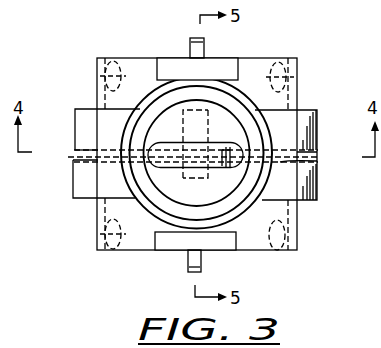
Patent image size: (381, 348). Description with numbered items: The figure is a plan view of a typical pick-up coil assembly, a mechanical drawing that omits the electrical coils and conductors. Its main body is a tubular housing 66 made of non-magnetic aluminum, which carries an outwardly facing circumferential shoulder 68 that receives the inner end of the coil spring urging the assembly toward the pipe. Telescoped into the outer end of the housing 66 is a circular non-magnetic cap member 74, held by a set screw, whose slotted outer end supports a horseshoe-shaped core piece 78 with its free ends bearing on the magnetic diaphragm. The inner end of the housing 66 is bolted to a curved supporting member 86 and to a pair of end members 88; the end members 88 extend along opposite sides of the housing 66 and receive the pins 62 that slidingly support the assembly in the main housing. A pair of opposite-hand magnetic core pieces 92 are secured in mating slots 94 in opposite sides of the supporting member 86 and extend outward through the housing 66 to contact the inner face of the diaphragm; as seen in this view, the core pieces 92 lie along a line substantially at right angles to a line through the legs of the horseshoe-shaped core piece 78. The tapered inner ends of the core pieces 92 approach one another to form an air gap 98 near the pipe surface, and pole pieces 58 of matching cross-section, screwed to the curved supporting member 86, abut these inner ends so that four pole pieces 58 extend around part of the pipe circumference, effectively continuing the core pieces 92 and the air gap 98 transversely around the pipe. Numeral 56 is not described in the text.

The mounting holes 56 is at (97, 75).
The pole pieces 58 is at (313, 138).
The pins 62 is at (204, 50).
The tubular housing 66 is at (136, 139).
The circumferential shoulder 68 is at (110, 117).
The cap member 74 is at (136, 176).
The horseshoe-shaped core piece 78 is at (190, 166).
The supporting member 86 is at (284, 124).
The end members 88 is at (180, 38).
The core pieces 92 is at (183, 125).
The mating slots 94 is at (208, 126).
The air gap 98 is at (314, 163).